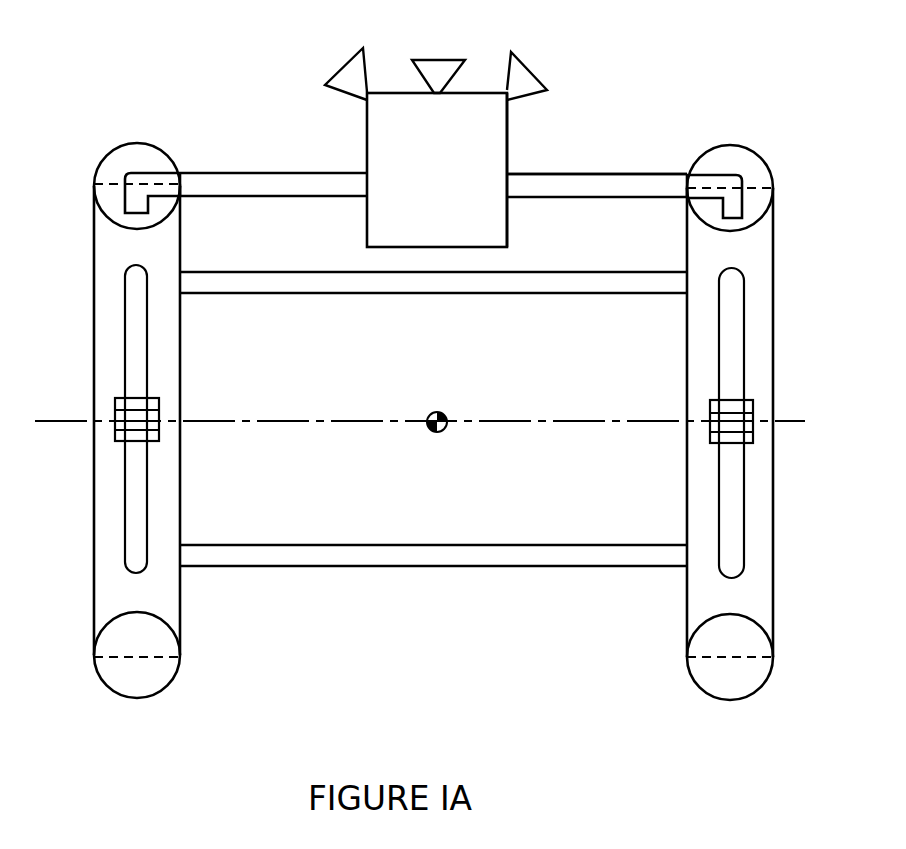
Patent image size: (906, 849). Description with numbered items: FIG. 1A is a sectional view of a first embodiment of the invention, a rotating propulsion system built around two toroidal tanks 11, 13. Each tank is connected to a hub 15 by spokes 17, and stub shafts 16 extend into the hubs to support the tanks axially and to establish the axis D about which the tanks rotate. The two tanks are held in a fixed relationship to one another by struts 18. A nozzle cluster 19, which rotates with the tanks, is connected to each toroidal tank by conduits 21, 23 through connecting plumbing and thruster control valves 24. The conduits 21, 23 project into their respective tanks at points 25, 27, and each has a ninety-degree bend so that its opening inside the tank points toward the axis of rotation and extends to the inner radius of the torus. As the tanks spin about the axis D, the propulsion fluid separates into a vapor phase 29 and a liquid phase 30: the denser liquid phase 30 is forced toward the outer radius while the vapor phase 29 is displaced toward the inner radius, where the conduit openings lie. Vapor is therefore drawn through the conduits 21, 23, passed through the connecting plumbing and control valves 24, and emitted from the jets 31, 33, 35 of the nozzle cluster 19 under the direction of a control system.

The toroidal tank 11 is at (180, 665).
The toroidal tank 13 is at (770, 683).
The hub 15 is at (160, 400).
The stub shaft 16 is at (125, 412).
The spoke 17 is at (148, 353).
The strut 18 is at (452, 294).
The nozzle cluster 19 is at (426, 26).
The conduit 21 is at (235, 173).
The conduit 23 is at (565, 174).
The connecting plumbing and thruster control valves 24 is at (507, 147).
The point 25 is at (180, 173).
The point 27 is at (687, 175).
The vapor phase 29 is at (112, 200).
The liquid phase 30 is at (120, 165).
The jet 31 is at (438, 62).
The jet 33 is at (333, 73).
The jet 35 is at (537, 75).
The axis D is at (520, 423).